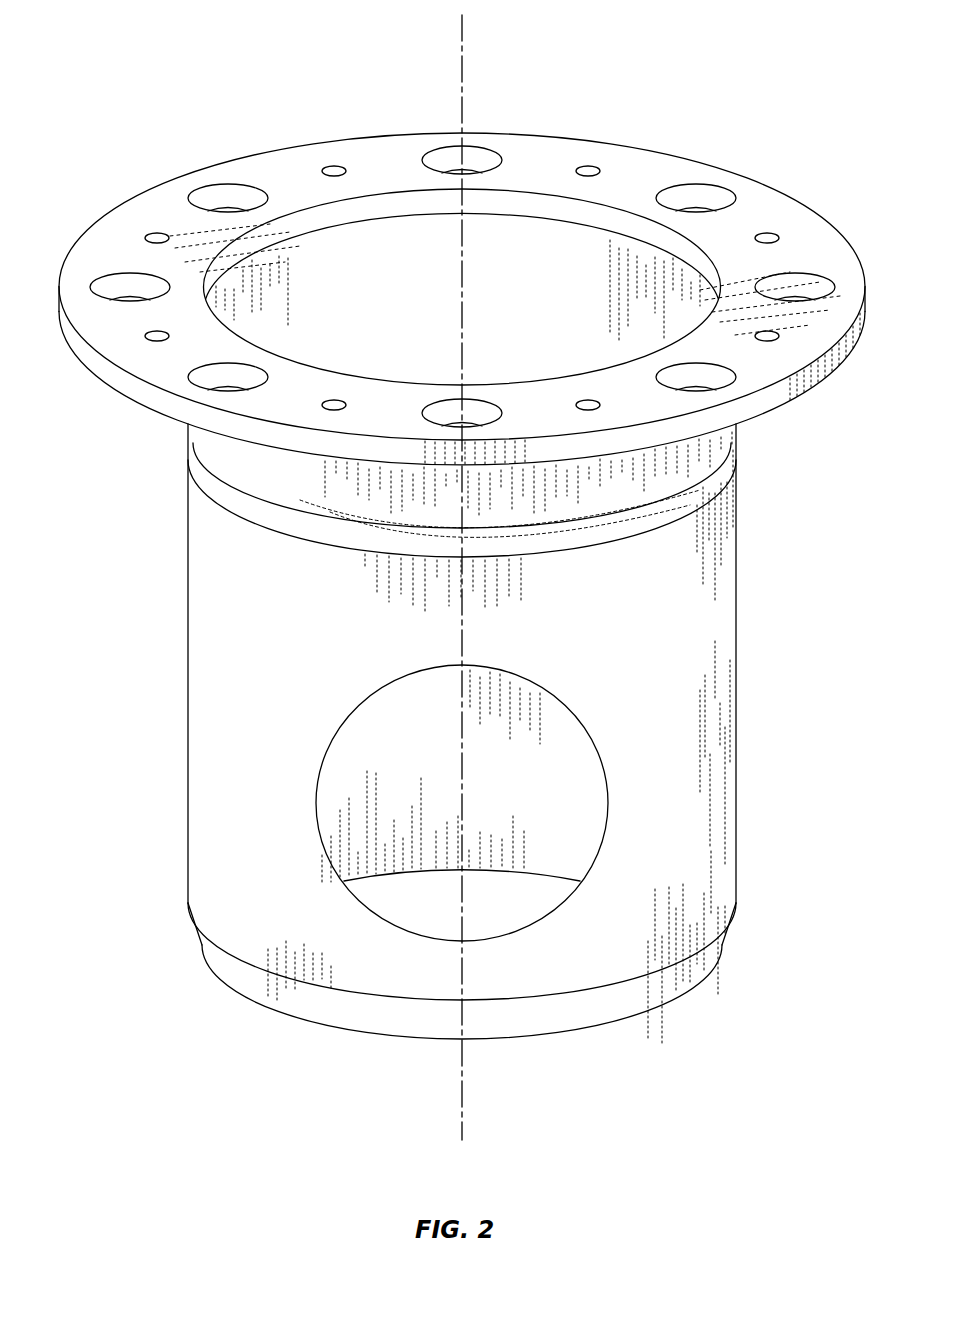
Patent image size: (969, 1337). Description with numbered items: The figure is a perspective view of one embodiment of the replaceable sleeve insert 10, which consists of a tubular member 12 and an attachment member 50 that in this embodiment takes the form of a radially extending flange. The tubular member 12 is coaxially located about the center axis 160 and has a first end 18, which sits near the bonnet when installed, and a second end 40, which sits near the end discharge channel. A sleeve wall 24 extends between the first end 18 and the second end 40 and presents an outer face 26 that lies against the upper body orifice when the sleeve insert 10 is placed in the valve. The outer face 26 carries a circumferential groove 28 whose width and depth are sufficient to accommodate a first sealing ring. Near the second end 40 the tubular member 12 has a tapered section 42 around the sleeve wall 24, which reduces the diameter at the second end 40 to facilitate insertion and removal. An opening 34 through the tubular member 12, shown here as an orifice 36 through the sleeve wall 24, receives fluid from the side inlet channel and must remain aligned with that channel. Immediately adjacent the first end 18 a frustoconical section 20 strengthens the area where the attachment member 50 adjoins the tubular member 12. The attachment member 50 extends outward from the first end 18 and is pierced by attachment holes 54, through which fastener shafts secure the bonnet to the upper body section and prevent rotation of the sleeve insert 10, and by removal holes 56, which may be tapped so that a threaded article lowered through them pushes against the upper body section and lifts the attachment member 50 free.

The replaceable sleeve insert 10 is at (158, 58).
The tubular member 12 is at (690, 633).
The first end 18 is at (378, 187).
The frustoconical section 20 is at (198, 442).
The sleeve wall 24 is at (706, 734).
The outer face 26 is at (367, 648).
The circumferential groove 28 is at (726, 459).
The opening 34 is at (378, 743).
The orifice 36 is at (366, 752).
The second end 40 is at (468, 1040).
The tapered section 42 is at (248, 981).
The attachment member 50 is at (840, 252).
The attachment holes 54 is at (450, 160).
The removal holes 56 is at (588, 167).
The center axis 160 is at (466, 86).